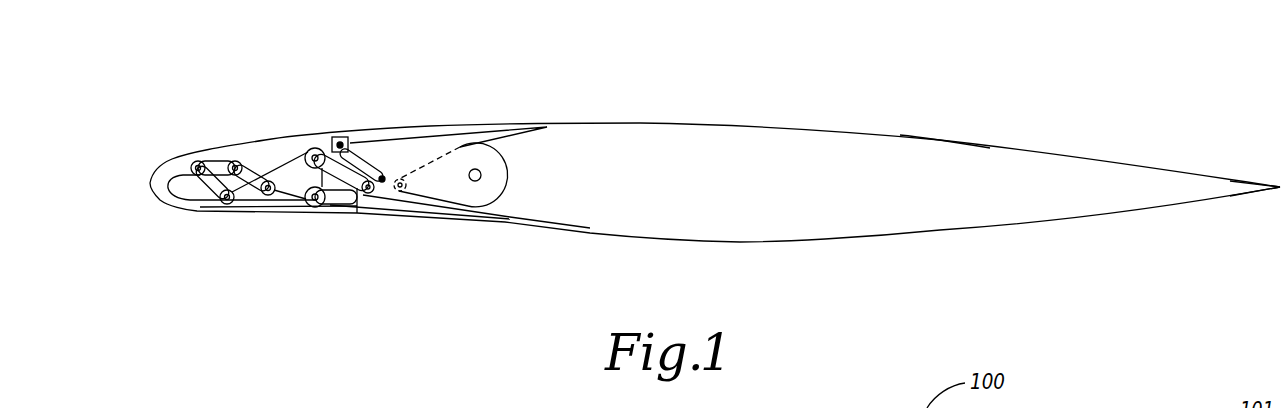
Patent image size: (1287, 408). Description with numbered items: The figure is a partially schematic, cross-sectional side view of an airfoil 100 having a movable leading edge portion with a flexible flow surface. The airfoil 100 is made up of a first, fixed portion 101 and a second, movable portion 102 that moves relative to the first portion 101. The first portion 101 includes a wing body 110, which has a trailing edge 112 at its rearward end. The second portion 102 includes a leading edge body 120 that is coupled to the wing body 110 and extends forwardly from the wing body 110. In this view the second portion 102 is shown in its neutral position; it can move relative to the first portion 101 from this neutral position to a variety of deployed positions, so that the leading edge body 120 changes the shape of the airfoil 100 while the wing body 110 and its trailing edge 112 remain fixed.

The airfoil 100 is at (681, 62).
The first, fixed portion 101 is at (803, 122).
The second, movable portion 102 is at (319, 117).
The wing body 110 is at (930, 172).
The trailing edge 112 is at (1240, 178).
The leading edge body 120 is at (150, 183).